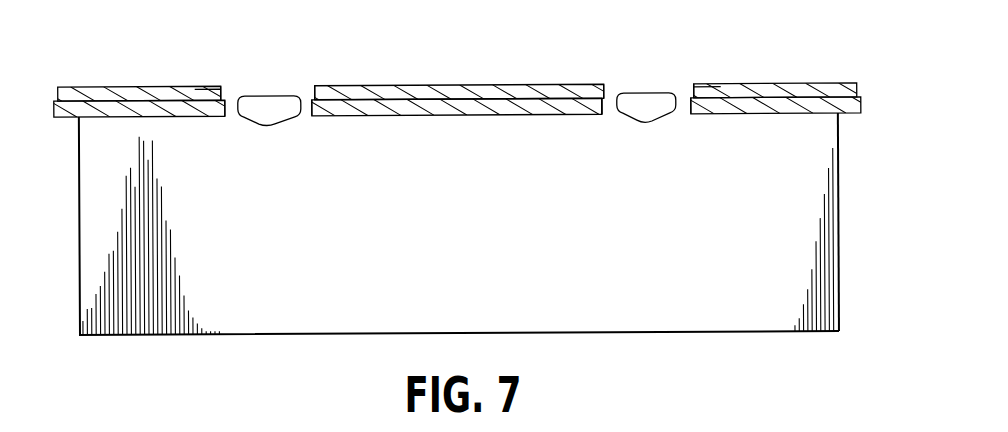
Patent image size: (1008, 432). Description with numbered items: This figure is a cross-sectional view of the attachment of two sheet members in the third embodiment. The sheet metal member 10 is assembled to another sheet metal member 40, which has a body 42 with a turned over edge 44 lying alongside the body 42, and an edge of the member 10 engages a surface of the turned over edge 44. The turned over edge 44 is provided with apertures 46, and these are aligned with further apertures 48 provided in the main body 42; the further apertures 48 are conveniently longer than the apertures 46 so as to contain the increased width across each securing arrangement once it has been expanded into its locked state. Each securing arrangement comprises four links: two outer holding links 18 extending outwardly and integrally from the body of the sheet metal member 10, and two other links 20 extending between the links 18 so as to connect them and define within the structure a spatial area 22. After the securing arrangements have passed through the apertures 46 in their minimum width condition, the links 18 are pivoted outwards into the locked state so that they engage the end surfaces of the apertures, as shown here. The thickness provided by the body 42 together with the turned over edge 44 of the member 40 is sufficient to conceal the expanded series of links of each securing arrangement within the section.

The sheet metal member 10 is at (71, 266).
The outer holding links 18 is at (305, 108).
The other links 20 is at (295, 87).
The spatial area 22 is at (270, 121).
The sheet metal member 40 is at (466, 78).
The body 42 is at (373, 87).
The turned over edge 44 is at (862, 118).
The apertures 46 is at (230, 108).
The further apertures 48 is at (194, 88).